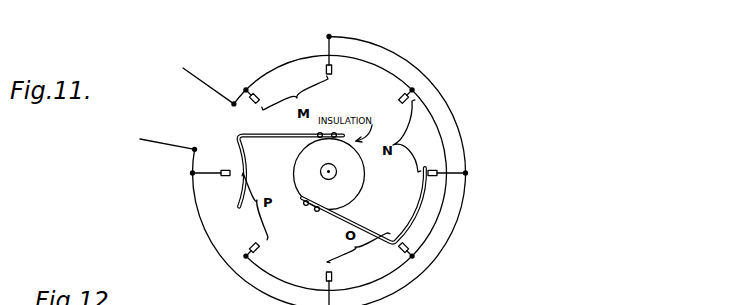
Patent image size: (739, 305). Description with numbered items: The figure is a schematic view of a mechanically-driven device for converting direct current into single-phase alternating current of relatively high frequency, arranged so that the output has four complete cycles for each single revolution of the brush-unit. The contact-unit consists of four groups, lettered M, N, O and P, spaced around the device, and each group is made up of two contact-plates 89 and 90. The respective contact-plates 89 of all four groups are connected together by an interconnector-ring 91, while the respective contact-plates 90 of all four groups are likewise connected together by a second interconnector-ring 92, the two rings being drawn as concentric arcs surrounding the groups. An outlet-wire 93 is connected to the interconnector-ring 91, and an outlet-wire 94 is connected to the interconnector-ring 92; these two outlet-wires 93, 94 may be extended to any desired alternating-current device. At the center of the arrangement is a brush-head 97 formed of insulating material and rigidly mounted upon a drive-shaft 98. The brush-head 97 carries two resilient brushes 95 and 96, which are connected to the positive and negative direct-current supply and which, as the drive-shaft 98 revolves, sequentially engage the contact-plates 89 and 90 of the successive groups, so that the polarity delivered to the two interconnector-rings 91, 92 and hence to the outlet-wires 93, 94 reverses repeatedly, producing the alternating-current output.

The contact-plate 89 is at (259, 97).
The contact-plate 90 is at (336, 70).
The interconnector-ring 91 is at (299, 58).
The interconnector-ring 92 is at (407, 62).
The outlet-wire 93 is at (214, 89).
The outlet-wire 94 is at (152, 143).
The resilient brush 95 is at (233, 159).
The resilient brush 96 is at (418, 207).
The brush-head 97 is at (365, 178).
The drive-shaft 98 is at (331, 179).